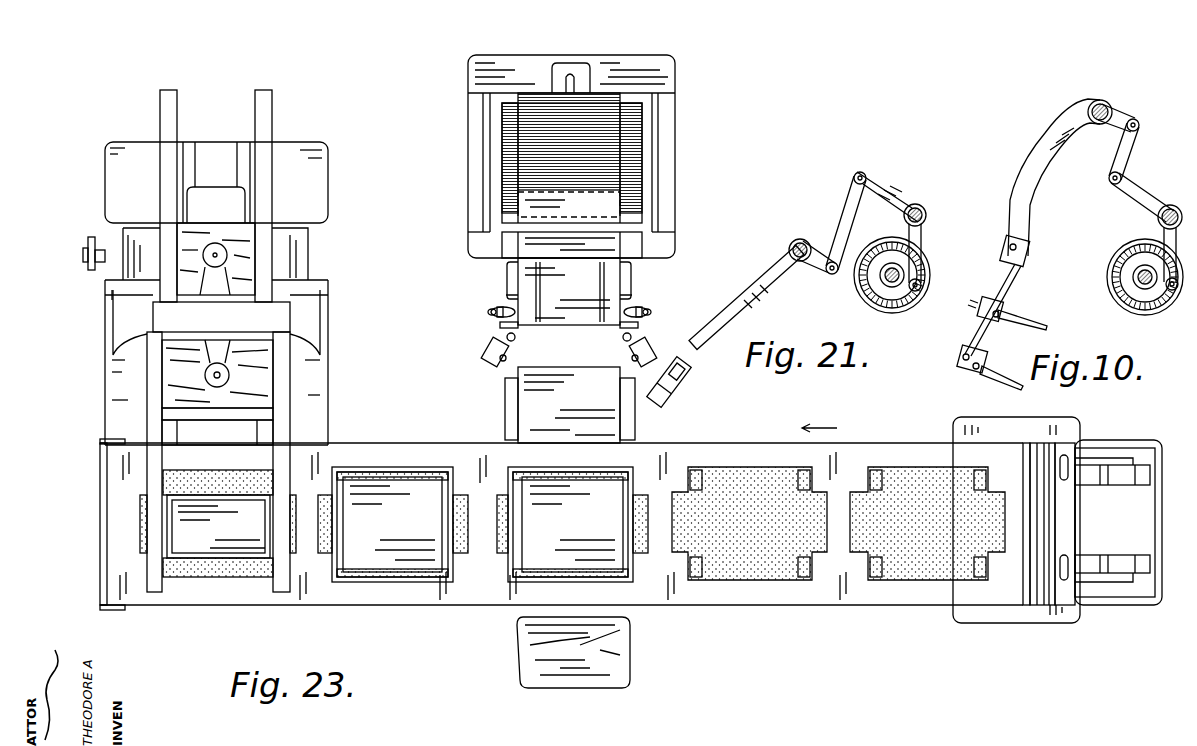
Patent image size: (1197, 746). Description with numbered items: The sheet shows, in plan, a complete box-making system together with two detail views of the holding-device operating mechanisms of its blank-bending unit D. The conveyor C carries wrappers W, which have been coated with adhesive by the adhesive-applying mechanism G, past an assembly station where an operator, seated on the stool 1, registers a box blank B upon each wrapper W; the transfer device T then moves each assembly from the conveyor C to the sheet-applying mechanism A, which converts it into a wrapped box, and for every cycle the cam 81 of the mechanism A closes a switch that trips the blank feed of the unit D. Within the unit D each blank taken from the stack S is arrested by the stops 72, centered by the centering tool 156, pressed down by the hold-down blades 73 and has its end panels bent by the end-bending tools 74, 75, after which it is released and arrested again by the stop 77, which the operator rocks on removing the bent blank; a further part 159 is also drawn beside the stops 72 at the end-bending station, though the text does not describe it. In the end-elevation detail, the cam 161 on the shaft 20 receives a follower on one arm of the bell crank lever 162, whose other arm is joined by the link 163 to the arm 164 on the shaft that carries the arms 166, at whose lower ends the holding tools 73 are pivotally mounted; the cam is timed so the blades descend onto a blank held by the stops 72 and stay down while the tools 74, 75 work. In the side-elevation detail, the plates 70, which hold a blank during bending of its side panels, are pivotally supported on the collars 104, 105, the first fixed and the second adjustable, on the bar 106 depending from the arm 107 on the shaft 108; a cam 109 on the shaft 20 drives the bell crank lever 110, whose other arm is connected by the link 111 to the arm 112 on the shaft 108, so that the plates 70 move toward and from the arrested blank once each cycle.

In FIG. 23, the sheet-applying mechanism A is at (122, 367).
In FIG. 23, the blank B is at (395, 415).
In FIG. 23, the conveyor C is at (366, 456).
In FIG. 23, the blank-bending unit D is at (672, 140).
In FIG. 23, the stack S is at (508, 163).
In FIG. 23, the transfer device T is at (280, 458).
In FIG. 23, the wrappers W is at (217, 577).
In FIG. 23, the adhesive-applying mechanism G is at (1102, 655).
In FIG. 23, the stool 1 is at (632, 645).
In FIG. 23, the cam 81 is at (87, 248).
In FIG. 23, the end-bending tool 75 is at (512, 282).
In FIG. 23, the end-bending tool 74 is at (622, 277).
In FIG. 23, the centering tool 156 is at (492, 310).
In FIG. 23, the stops 72 is at (512, 328).
In FIG. 23, the folding jaw 159 is at (498, 352).
In FIG. 23, the hold-down blades 73 is at (672, 415).
In FIG. 23, the stop 77 is at (640, 452).
In FIG. 21, the arms 166 is at (764, 276).
In FIG. 21, the arm 164 is at (822, 276).
In FIG. 21, the link 163 is at (852, 228).
In FIG. 21, the bell crank lever 162 is at (920, 238).
In FIG. 21, the cam 161 is at (922, 289).
In FIG. 21, the shaft 20 is at (900, 276).
In FIG. 10, the shaft 20 is at (1140, 277).
In FIG. 10, the arm 107 is at (1045, 157).
In FIG. 10, the shaft 108 is at (1103, 104).
In FIG. 10, the arm 112 is at (1123, 120).
In FIG. 10, the link 111 is at (1130, 146).
In FIG. 10, the bell crank lever 110 is at (1145, 200).
In FIG. 10, the cam 109 is at (1112, 267).
In FIG. 10, the bar 106 is at (1000, 280).
In FIG. 10, the collar 105 is at (985, 314).
In FIG. 10, the collar 104 is at (965, 370).
In FIG. 10, the plates 70 is at (1036, 326).